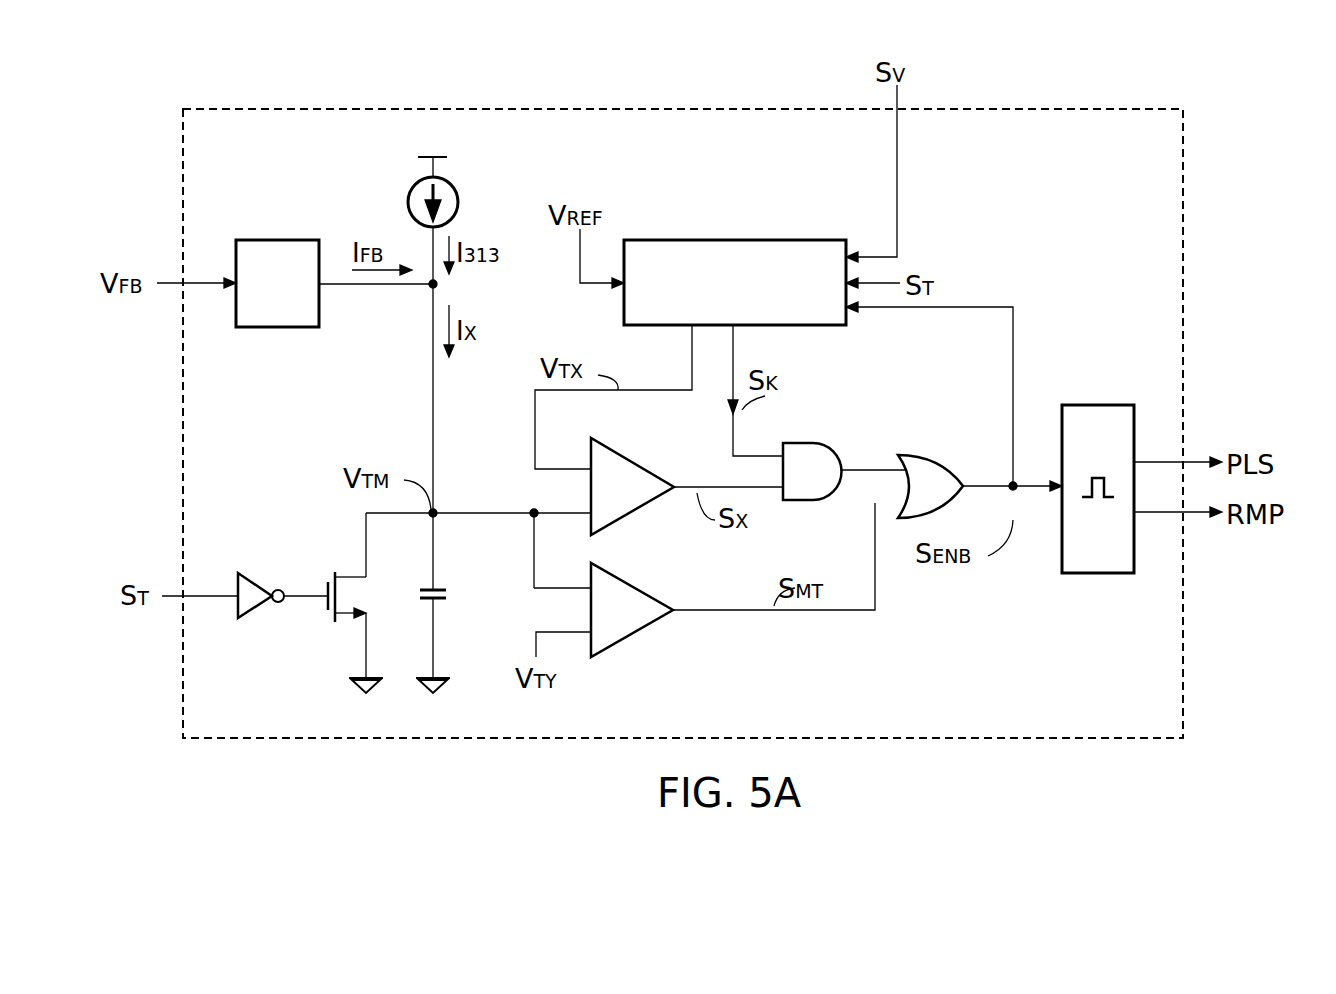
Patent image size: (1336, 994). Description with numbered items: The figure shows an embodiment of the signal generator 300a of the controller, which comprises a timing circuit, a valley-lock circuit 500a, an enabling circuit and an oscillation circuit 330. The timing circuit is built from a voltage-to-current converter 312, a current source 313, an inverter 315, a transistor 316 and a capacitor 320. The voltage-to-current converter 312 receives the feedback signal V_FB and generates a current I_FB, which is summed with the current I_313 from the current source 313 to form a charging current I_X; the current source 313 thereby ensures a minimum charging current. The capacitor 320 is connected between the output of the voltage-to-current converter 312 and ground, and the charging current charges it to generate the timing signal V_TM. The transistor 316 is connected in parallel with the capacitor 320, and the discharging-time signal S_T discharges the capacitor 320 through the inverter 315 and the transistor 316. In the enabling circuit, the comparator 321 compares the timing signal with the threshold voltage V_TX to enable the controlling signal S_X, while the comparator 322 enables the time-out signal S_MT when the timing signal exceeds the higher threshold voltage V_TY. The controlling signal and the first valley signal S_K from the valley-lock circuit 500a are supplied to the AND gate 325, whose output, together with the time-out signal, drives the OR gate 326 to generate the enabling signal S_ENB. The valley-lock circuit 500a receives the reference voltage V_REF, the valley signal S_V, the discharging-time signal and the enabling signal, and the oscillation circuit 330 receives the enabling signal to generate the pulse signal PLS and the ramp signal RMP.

The signal generator 300a is at (1081, 108).
The voltage-to-current converter 312 is at (282, 240).
The current source 313 is at (458, 206).
The inverter 315 is at (256, 578).
The transistor 316 is at (340, 628).
The capacitor 320 is at (452, 596).
The comparator 321 is at (612, 455).
The comparator 322 is at (614, 580).
The AND gate 325 is at (806, 443).
The OR gate 326 is at (927, 455).
The oscillation circuit 330 is at (1094, 405).
The valley-lock circuit 500a is at (727, 240).